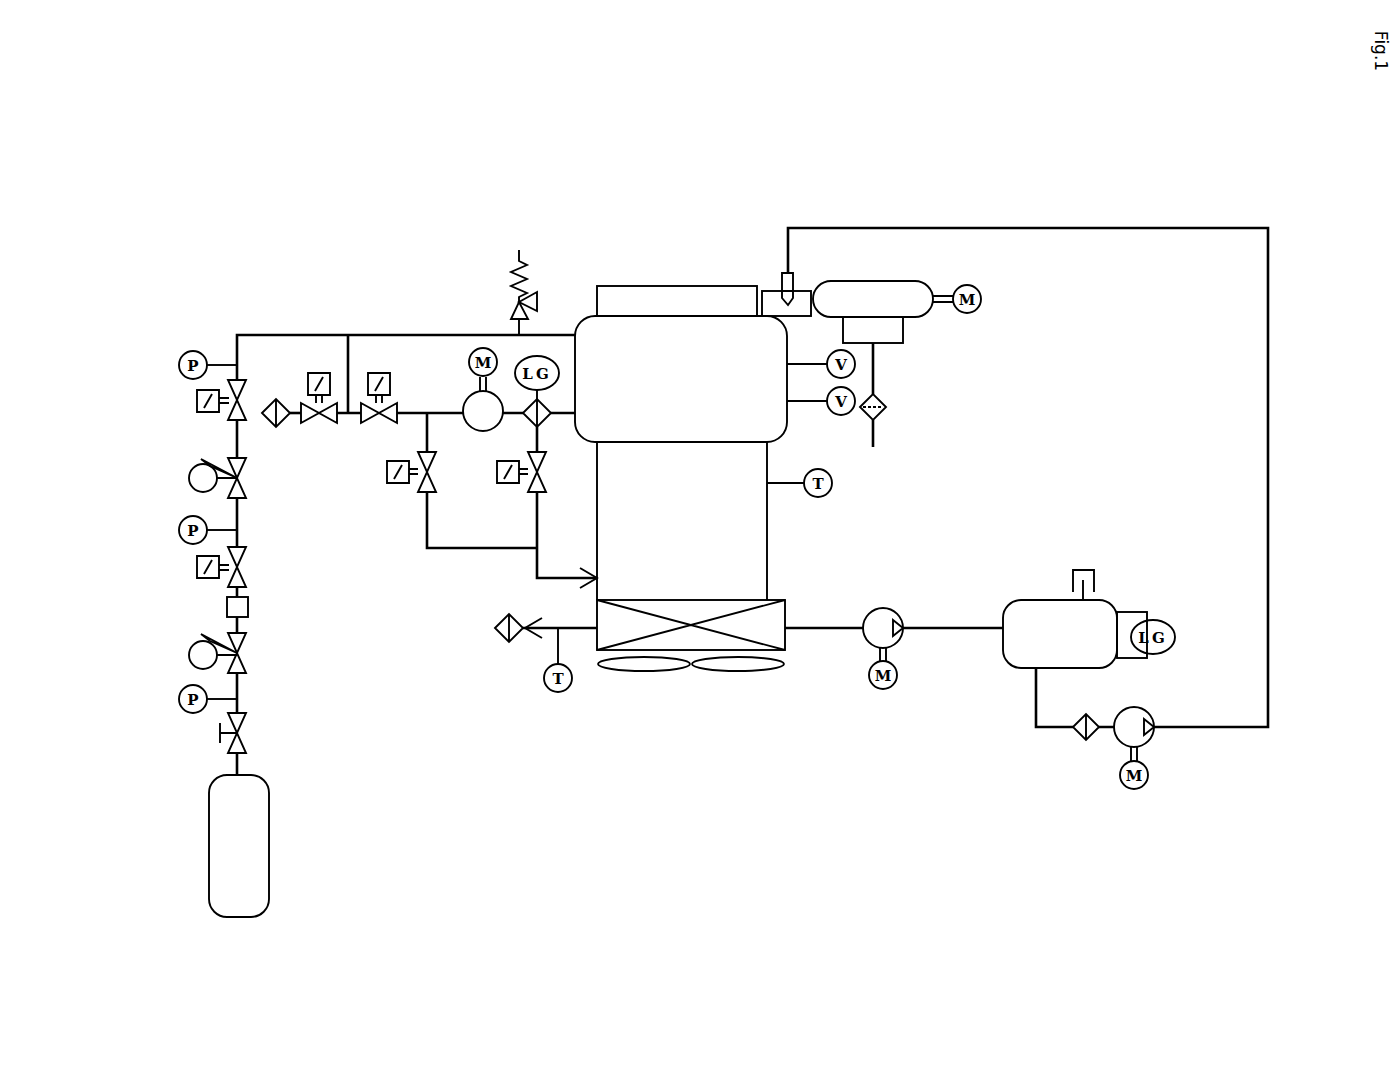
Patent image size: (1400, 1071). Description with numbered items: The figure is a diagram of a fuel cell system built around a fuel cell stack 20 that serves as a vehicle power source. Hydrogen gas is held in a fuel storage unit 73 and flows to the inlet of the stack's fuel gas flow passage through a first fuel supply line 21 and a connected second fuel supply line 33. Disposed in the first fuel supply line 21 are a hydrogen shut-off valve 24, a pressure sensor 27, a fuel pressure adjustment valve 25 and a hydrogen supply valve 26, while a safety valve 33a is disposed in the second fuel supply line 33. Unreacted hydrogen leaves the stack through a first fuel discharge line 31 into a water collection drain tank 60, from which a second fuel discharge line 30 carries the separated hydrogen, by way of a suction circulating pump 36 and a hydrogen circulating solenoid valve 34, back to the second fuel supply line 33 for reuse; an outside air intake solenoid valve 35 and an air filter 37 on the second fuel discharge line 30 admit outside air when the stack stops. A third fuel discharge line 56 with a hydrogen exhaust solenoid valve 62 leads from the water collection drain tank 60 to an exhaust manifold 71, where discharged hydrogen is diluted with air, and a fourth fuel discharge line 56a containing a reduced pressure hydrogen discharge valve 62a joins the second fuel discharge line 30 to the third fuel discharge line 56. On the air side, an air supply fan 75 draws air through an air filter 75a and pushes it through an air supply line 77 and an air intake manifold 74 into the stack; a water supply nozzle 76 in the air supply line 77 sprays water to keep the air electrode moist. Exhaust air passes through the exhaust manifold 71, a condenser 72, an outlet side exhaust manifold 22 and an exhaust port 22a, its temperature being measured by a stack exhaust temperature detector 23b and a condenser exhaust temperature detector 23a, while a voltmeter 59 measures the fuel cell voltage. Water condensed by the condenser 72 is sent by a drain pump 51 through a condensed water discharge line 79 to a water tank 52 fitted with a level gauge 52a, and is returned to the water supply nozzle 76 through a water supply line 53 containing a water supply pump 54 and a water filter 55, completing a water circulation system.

The fuel cell stack 20 is at (578, 322).
The first fuel supply line 21 is at (290, 333).
The outlet side exhaust manifold 22 is at (545, 640).
The exhaust port 22a is at (495, 630).
The condenser exhaust temperature detector 23a is at (558, 693).
The stack exhaust temperature detector 23b is at (833, 483).
The hydrogen shut-off valve 24 is at (246, 733).
The fuel pressure adjustment valve 25 is at (189, 479).
The hydrogen supply valve 26 is at (197, 401).
The pressure sensor 27 is at (180, 366).
The second fuel discharge line 30 is at (511, 410).
The first fuel discharge line 31 is at (551, 416).
The second fuel supply line 33 is at (425, 333).
The safety valve 33a is at (539, 284).
The hydrogen circulating solenoid valve 34 is at (372, 425).
The outside air intake solenoid valve 35 is at (318, 425).
The suction circulating pump 36 is at (465, 396).
The air filter 37 is at (276, 399).
The drain pump 51 is at (900, 614).
The water tank 52 is at (1040, 600).
The level gauge 52a is at (1170, 628).
The water supply line 53 is at (1268, 372).
The water supply pump 54 is at (1150, 712).
The water filter 55 is at (1082, 741).
The third fuel discharge line 56 is at (565, 577).
The fourth fuel discharge line 56a is at (470, 549).
The voltmeter 59 is at (831, 362).
The water collection drain tank 60 is at (527, 423).
The hydrogen exhaust solenoid valve 62 is at (550, 481).
The reduced pressure hydrogen discharge valve 62a is at (425, 487).
The exhaust manifold 71 is at (768, 541).
The condenser 72 is at (785, 603).
The fuel storage unit 73 is at (270, 805).
The air intake manifold 74 is at (683, 286).
The air supply fan 75 is at (883, 281).
The air filter 75a is at (887, 405).
The water supply nozzle 76 is at (794, 275).
The air supply line 77 is at (765, 291).
The condensed water discharge line 79 is at (825, 632).